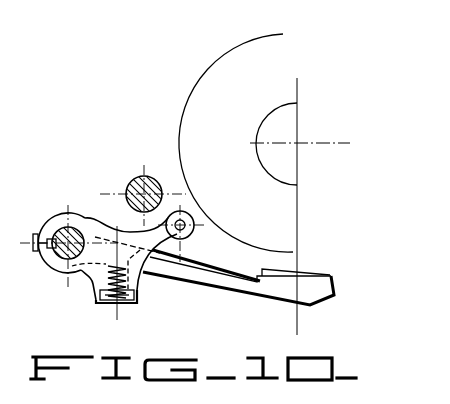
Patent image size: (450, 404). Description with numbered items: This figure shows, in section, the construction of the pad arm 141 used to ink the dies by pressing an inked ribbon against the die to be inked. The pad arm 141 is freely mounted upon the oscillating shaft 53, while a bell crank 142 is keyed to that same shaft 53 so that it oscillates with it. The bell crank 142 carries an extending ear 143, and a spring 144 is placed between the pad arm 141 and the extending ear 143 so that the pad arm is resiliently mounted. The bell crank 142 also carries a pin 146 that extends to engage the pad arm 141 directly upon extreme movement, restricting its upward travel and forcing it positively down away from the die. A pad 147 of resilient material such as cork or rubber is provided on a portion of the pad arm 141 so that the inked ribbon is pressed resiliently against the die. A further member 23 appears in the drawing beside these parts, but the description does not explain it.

The pin 23 is at (138, 178).
The lever 142 is at (112, 229).
The pivot shaft 53 is at (57, 258).
The spring housing 144 is at (95, 288).
The spring 143 is at (139, 298).
The roller 146 is at (186, 230).
The lever arm 141 is at (223, 287).
The pad 147 is at (315, 273).